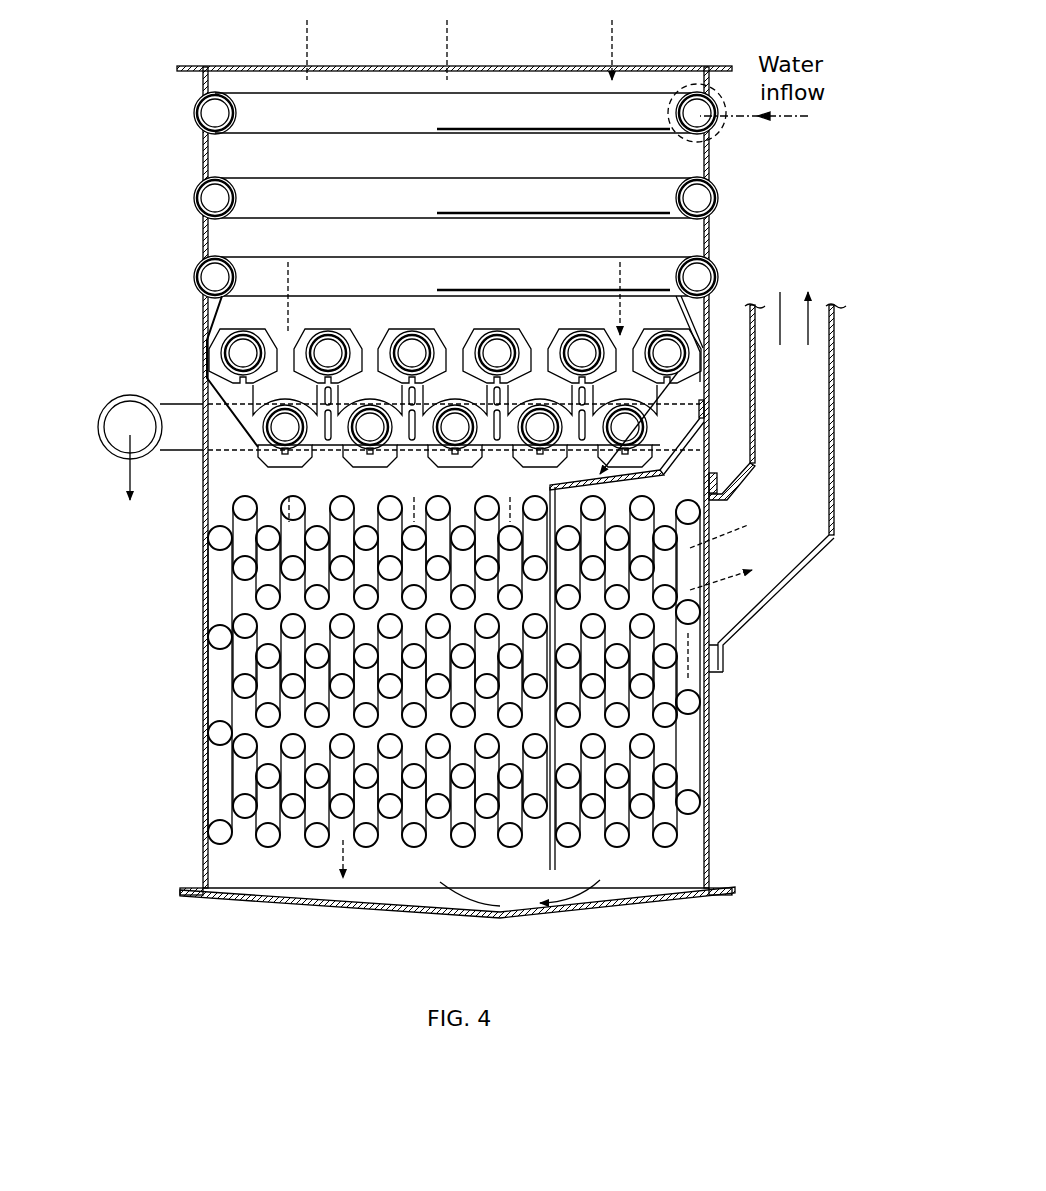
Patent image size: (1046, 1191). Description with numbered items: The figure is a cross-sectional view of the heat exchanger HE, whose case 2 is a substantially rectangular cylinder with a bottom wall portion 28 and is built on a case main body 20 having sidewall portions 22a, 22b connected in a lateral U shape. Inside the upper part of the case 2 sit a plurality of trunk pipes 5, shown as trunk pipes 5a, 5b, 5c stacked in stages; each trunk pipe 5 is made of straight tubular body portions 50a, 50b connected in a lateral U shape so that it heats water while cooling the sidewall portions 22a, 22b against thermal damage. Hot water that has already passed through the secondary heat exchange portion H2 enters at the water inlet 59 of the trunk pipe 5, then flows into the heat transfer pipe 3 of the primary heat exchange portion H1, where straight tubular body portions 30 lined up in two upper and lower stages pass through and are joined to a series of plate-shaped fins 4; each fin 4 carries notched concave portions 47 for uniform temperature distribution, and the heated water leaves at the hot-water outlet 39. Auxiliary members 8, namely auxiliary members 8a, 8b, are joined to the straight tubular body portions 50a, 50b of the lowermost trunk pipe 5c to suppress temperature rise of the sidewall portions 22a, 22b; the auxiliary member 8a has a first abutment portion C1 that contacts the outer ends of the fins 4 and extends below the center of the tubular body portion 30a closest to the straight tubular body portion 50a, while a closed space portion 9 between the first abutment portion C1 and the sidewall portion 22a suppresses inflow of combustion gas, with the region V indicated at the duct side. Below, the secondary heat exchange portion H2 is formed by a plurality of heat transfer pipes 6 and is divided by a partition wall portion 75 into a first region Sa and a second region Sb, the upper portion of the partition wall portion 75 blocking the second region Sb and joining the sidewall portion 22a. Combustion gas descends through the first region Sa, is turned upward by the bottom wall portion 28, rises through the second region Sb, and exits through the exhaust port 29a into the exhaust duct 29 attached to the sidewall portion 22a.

The heat exchanger HE is at (125, 84).
The case 2 is at (200, 150).
The case main body 20 is at (200, 172).
The sidewall portion 22a is at (712, 170).
The sidewall portion 22b is at (203, 236).
The straight tubular body portion 50a is at (706, 255).
The straight tubular body portion 50b is at (203, 256).
The water inlet 59 is at (725, 122).
The trunk pipe 5 is at (456, 166).
The trunk pipe 5a is at (470, 100).
The trunk pipe 5b is at (465, 197).
The lowermost trunk pipe 5c is at (437, 271).
The auxiliary member 8 is at (448, 337).
The auxiliary member 8a is at (685, 330).
The auxiliary member 8b is at (232, 335).
The primary heat exchange portion H1 is at (405, 305).
The notched concave portion 47 is at (288, 375).
The tubular body portion 30 is at (398, 330).
The tubular body portion 30a is at (678, 372).
The heat transfer pipe 3 is at (508, 364).
The fin 4 is at (637, 340).
The space portion 9 is at (701, 326).
The first abutment portion C1 is at (703, 345).
The vent V is at (720, 306).
The exhaust duct 29 is at (835, 356).
The exhaust port 29a is at (712, 523).
The partition wall portion 75 is at (624, 477).
The hot-water outlet 39 is at (112, 420).
The secondary heat exchange portion H2 is at (228, 489).
The heat transfer pipe 6 is at (306, 502).
The first region Sa is at (225, 673).
The second region Sb is at (694, 695).
The bottom wall portion 28 is at (382, 910).